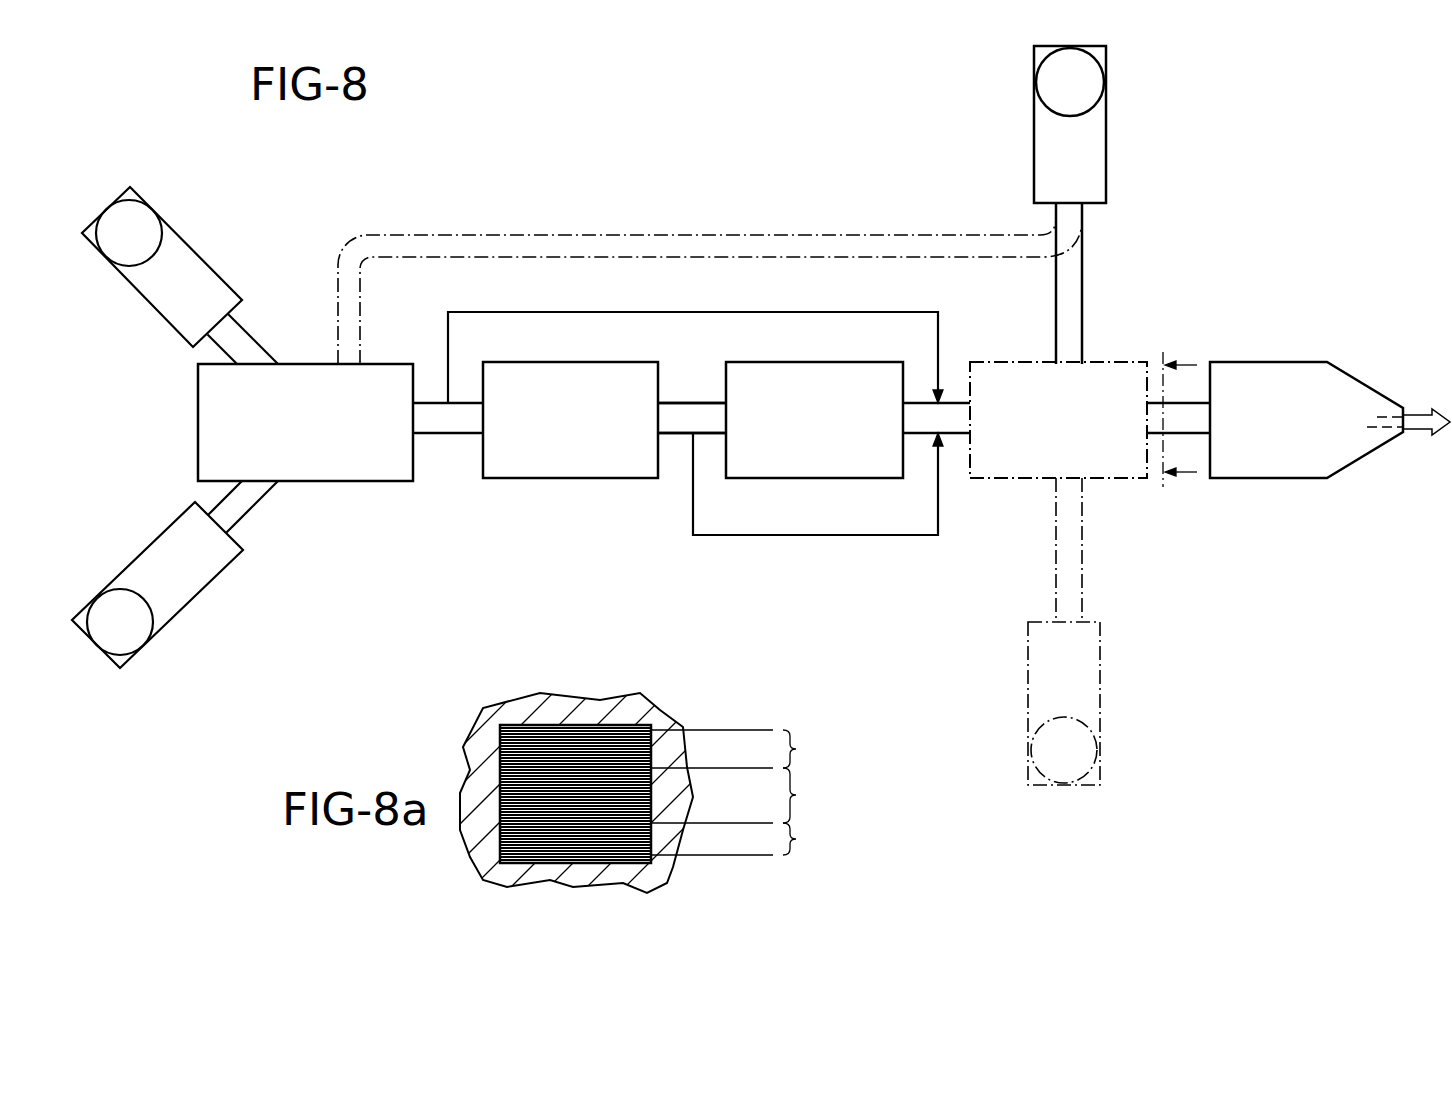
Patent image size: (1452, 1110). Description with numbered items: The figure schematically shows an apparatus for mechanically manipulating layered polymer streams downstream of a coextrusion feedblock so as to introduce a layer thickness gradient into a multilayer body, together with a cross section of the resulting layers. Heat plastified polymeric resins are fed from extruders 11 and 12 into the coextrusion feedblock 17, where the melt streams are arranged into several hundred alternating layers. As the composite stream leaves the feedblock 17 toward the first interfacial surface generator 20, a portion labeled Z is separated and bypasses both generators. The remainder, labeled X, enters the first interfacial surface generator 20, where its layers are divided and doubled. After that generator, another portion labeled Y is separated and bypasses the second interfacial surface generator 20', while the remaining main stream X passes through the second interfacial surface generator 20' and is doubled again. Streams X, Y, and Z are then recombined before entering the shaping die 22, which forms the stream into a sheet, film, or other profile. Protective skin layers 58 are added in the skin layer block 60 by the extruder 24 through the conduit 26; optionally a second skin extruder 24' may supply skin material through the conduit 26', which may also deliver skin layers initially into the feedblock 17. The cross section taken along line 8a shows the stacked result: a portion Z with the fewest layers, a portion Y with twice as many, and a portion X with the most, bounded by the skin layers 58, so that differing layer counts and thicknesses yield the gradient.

In FIG. 8, the extruder 11 is at (193, 247).
In FIG. 8, the extruder 12 is at (198, 597).
In FIG. 8, the coextrusion feedblock 17 is at (347, 482).
In FIG. 8, the first interfacial surface generator 20 is at (570, 397).
In FIG. 8, the second interfacial surface generator 20' is at (814, 397).
In FIG. 8, the shaping die 22 is at (1265, 362).
In FIG. 8, the extruder 24 is at (1109, 124).
In FIG. 8, the second skin extruder 24' is at (1122, 703).
In FIG. 8, the conduit 26 is at (1114, 283).
In FIG. 8, the conduit 26' is at (759, 394).
In FIG. 8, the skin layer block 60 is at (1018, 480).
In FIG. 8, the line 8a— 8a is at (1172, 427).
In FIG. 8A, the protective skin layers 58 is at (627, 725).
In FIG. 8, the main stream X is at (684, 415).
In FIG. 8A, the main stream X is at (802, 795).
In FIG. 8, the stream portion Y is at (803, 535).
In FIG. 8A, the stream portion Y is at (801, 839).
In FIG. 8, the stream portion Z is at (703, 312).
In FIG. 8A, the stream portion Z is at (802, 749).